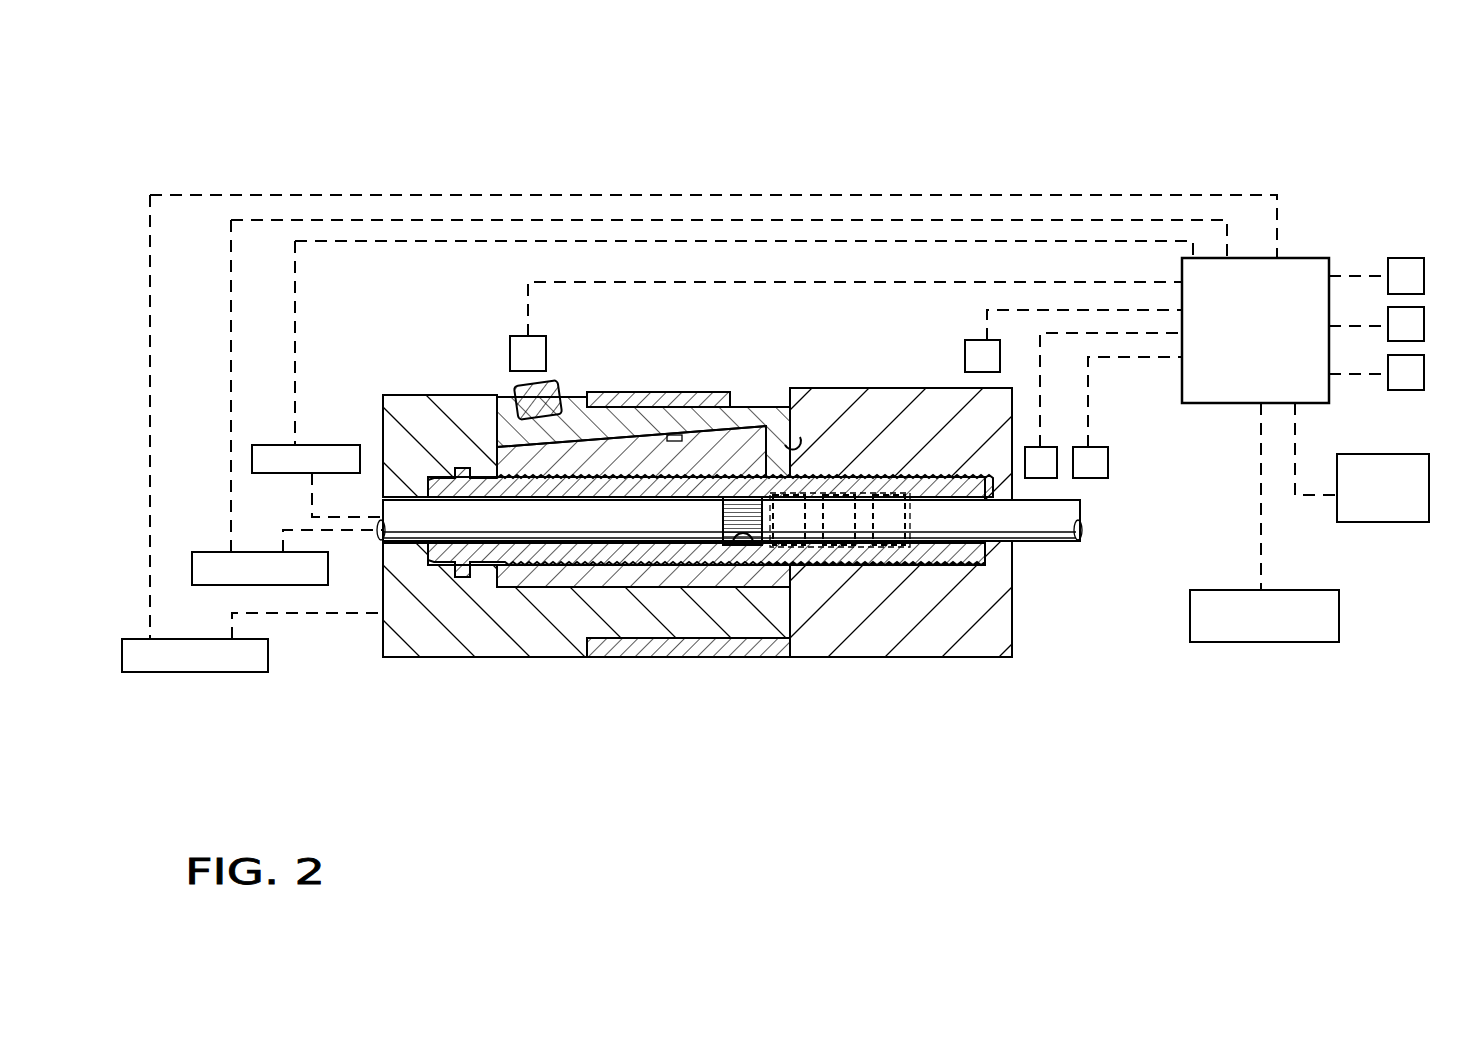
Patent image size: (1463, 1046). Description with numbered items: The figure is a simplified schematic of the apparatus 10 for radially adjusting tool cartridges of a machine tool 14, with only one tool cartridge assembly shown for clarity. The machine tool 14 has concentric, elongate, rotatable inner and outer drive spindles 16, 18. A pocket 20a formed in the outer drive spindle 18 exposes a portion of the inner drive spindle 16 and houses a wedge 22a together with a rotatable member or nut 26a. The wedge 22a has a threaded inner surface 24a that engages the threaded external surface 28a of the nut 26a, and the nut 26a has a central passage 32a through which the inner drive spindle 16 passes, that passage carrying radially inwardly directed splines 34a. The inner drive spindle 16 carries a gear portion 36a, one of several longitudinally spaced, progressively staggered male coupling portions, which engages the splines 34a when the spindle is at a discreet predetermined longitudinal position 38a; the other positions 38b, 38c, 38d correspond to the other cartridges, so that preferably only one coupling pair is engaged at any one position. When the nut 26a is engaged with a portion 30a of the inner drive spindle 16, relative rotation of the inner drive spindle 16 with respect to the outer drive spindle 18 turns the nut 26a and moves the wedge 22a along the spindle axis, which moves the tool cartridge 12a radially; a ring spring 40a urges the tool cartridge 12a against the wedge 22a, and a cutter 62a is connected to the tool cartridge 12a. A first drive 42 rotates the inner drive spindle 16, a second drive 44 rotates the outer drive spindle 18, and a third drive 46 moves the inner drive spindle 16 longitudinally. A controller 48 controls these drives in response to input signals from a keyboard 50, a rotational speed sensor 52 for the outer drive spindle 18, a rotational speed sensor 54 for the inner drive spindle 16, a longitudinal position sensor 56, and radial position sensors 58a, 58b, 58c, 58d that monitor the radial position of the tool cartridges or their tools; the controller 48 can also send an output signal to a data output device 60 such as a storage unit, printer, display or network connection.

The apparatus 10 is at (795, 155).
The machine tool 14 is at (398, 322).
The outer drive spindle 18 is at (400, 405).
The tool cartridge 12a is at (515, 400).
The wedge 22a is at (737, 445).
The pocket 20a is at (800, 437).
The radial position sensor 58a is at (512, 340).
The cutter 62a is at (555, 382).
The threaded inner surface 24a is at (698, 472).
The rotatable member 26a is at (555, 552).
The central passage 32a is at (503, 532).
The inner drive spindle 16 is at (1072, 542).
The portion of the inner drive spindle 30a is at (608, 523).
The ring spring 40a is at (620, 650).
The gear portion 36a is at (678, 562).
The threaded external surface 28a is at (737, 540).
The predetermined longitudinal position 38a is at (700, 513).
The splines 34a is at (755, 540).
The predetermined longitudinal position 38b is at (807, 530).
The predetermined longitudinal position 38c is at (853, 530).
The predetermined longitudinal position 38d is at (907, 530).
The rotational speed sensor 52 is at (965, 350).
The rotational speed sensor 54 is at (1048, 452).
The longitudinal position sensor 56 is at (1105, 455).
The controller 48 is at (1297, 265).
The radial position sensor 58b is at (1398, 262).
The radial position sensor 58c is at (1420, 315).
The radial position sensor 58d is at (1423, 384).
The data output device 60 is at (1407, 513).
The keyboard 50 is at (1298, 627).
The third drive 46 is at (272, 445).
The first drive 42 is at (212, 556).
The second drive 44 is at (185, 663).